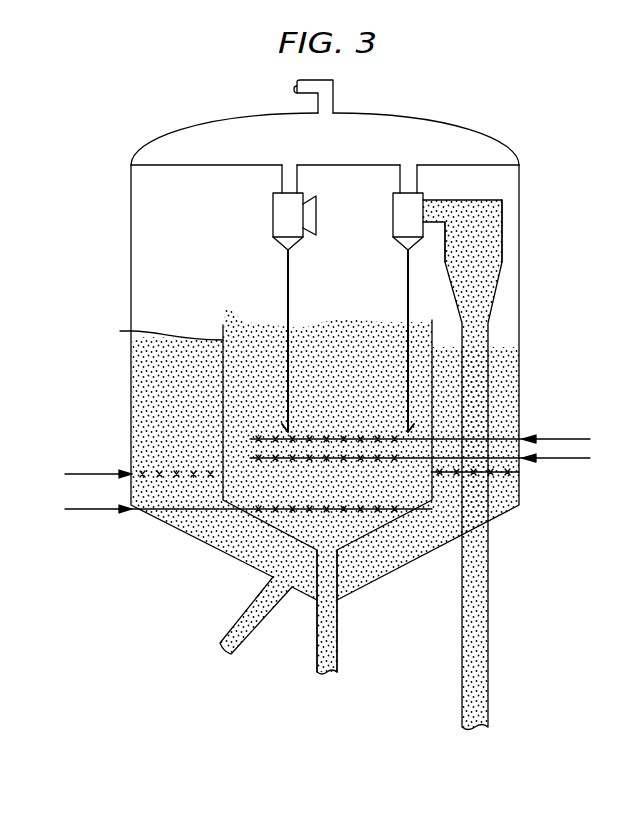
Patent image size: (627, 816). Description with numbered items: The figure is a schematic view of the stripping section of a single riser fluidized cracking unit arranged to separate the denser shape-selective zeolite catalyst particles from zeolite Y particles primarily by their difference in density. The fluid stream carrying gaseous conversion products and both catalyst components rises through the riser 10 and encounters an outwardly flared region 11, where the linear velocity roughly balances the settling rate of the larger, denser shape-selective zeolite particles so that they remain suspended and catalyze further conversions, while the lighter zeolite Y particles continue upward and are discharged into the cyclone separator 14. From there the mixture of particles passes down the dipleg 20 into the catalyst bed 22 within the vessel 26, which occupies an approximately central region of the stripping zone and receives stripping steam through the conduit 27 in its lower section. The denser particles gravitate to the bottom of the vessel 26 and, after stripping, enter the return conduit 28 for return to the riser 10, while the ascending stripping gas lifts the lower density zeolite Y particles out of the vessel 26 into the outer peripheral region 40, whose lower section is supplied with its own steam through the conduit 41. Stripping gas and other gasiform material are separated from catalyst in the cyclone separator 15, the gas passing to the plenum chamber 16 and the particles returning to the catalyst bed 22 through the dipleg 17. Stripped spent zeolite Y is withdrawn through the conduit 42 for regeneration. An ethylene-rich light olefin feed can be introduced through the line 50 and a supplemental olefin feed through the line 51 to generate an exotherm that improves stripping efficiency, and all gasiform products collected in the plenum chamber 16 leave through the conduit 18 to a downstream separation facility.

The riser 10 is at (488, 634).
The outwardly flared region 11 is at (470, 248).
The cyclone separator 14 is at (417, 226).
The cyclone separator 15 is at (298, 226).
The plenum chamber 16 is at (338, 149).
The dipleg 17 is at (290, 312).
The conduit 18 is at (335, 91).
The dipleg 20 is at (408, 268).
The catalyst bed 22 is at (358, 350).
The vessel 26 is at (163, 335).
The conduit 27 is at (92, 512).
The return conduit 28 is at (338, 640).
The outer peripheral region 40 is at (172, 380).
The conduit 41 is at (92, 472).
The conduit 42 is at (233, 627).
The line 50 is at (553, 458).
The line 51 is at (557, 437).